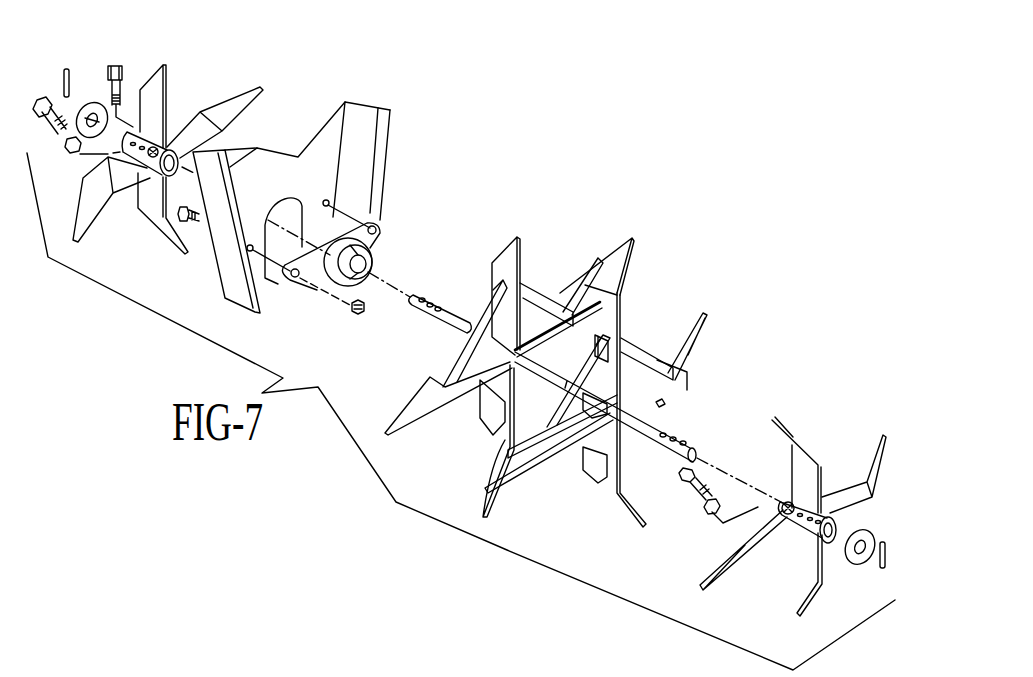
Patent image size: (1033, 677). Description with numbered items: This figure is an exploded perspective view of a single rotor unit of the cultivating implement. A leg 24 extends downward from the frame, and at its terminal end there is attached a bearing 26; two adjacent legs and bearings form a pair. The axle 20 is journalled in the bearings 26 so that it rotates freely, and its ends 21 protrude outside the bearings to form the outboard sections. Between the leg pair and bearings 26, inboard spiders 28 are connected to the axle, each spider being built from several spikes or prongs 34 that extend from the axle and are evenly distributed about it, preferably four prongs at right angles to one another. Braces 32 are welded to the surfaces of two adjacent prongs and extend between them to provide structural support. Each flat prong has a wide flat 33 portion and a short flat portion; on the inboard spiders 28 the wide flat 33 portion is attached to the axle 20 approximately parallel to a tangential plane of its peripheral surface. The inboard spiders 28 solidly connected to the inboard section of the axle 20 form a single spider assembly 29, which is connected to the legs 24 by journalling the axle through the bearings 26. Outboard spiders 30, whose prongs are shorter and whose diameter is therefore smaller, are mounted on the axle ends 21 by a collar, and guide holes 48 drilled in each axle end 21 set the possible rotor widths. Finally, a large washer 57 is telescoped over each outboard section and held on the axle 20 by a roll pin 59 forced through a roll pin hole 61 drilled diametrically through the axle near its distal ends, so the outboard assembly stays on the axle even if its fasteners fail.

The axle 20 is at (642, 427).
The ends of axle 21 is at (452, 312).
The leg 24 is at (313, 147).
The bearing 26 is at (378, 240).
The inboard spider 28 is at (438, 420).
The spider assembly 29 is at (677, 287).
The outboard spider 30 is at (770, 563).
The brace 32 is at (537, 300).
The wide flat portion 33 is at (218, 107).
The prong 34 is at (623, 257).
The guide hole 48 is at (663, 435).
The washer 57 is at (88, 104).
The roll pin 59 is at (66, 66).
The roll pin hole 61 is at (673, 440).